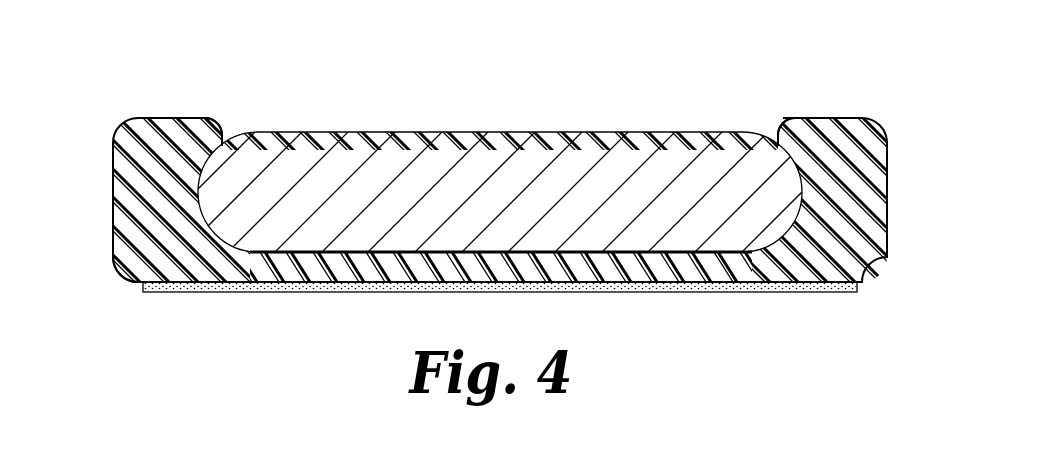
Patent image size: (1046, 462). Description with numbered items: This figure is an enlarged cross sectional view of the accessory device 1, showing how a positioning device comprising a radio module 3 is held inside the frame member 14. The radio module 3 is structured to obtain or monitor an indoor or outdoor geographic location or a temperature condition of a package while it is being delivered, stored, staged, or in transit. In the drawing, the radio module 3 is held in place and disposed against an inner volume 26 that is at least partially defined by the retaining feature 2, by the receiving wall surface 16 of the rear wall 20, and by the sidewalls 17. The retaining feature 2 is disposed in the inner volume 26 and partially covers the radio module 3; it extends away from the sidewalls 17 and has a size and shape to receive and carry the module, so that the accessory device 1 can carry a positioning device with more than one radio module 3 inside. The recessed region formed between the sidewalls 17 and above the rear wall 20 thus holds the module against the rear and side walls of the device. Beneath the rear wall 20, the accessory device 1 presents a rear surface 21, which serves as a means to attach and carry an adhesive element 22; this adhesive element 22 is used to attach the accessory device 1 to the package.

The accessory device 1 is at (881, 73).
The retaining feature 2 is at (216, 118).
The radio module 3 is at (401, 191).
The frame member 14 is at (120, 275).
The receiving wall surface 16 is at (343, 241).
The sidewalls 17 is at (137, 198).
The rear wall 20 is at (692, 272).
The rear surface 21 is at (747, 283).
The adhesive element 22 is at (817, 292).
The inner volume 26 is at (532, 198).